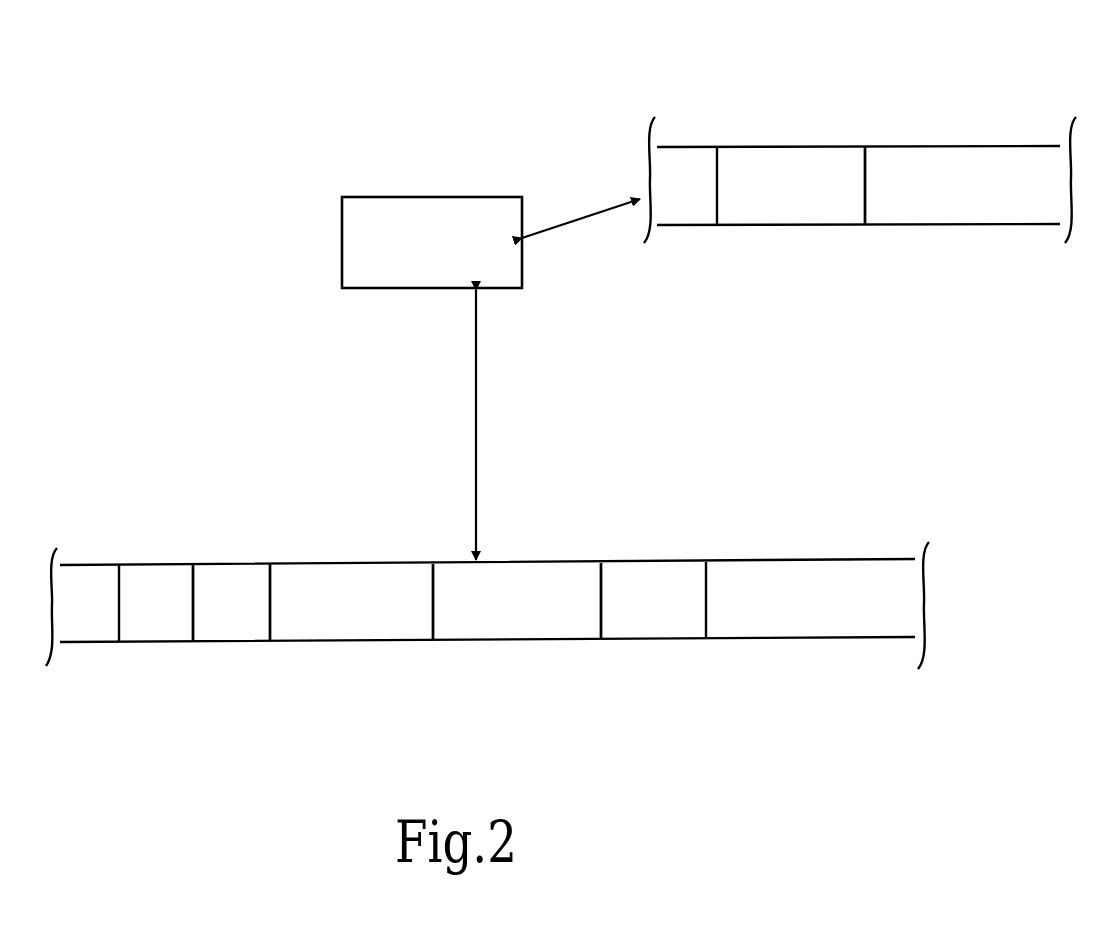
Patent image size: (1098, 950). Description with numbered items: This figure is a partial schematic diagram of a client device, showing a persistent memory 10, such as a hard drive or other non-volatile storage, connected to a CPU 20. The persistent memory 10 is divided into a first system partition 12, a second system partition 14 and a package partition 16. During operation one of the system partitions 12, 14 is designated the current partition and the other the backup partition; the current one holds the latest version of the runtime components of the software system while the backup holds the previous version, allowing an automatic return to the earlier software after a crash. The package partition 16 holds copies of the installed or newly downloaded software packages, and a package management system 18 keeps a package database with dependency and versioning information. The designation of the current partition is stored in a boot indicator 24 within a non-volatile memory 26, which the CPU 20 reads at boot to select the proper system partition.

The persistent memory 10 is at (748, 528).
The first system partition 12 is at (147, 580).
The second system partition 14 is at (223, 580).
The package partition 16 is at (315, 578).
The package management system 18 is at (660, 622).
The CPU 20 is at (432, 227).
The boot indicator 24 is at (758, 163).
The non-volatile memory 26 is at (898, 115).